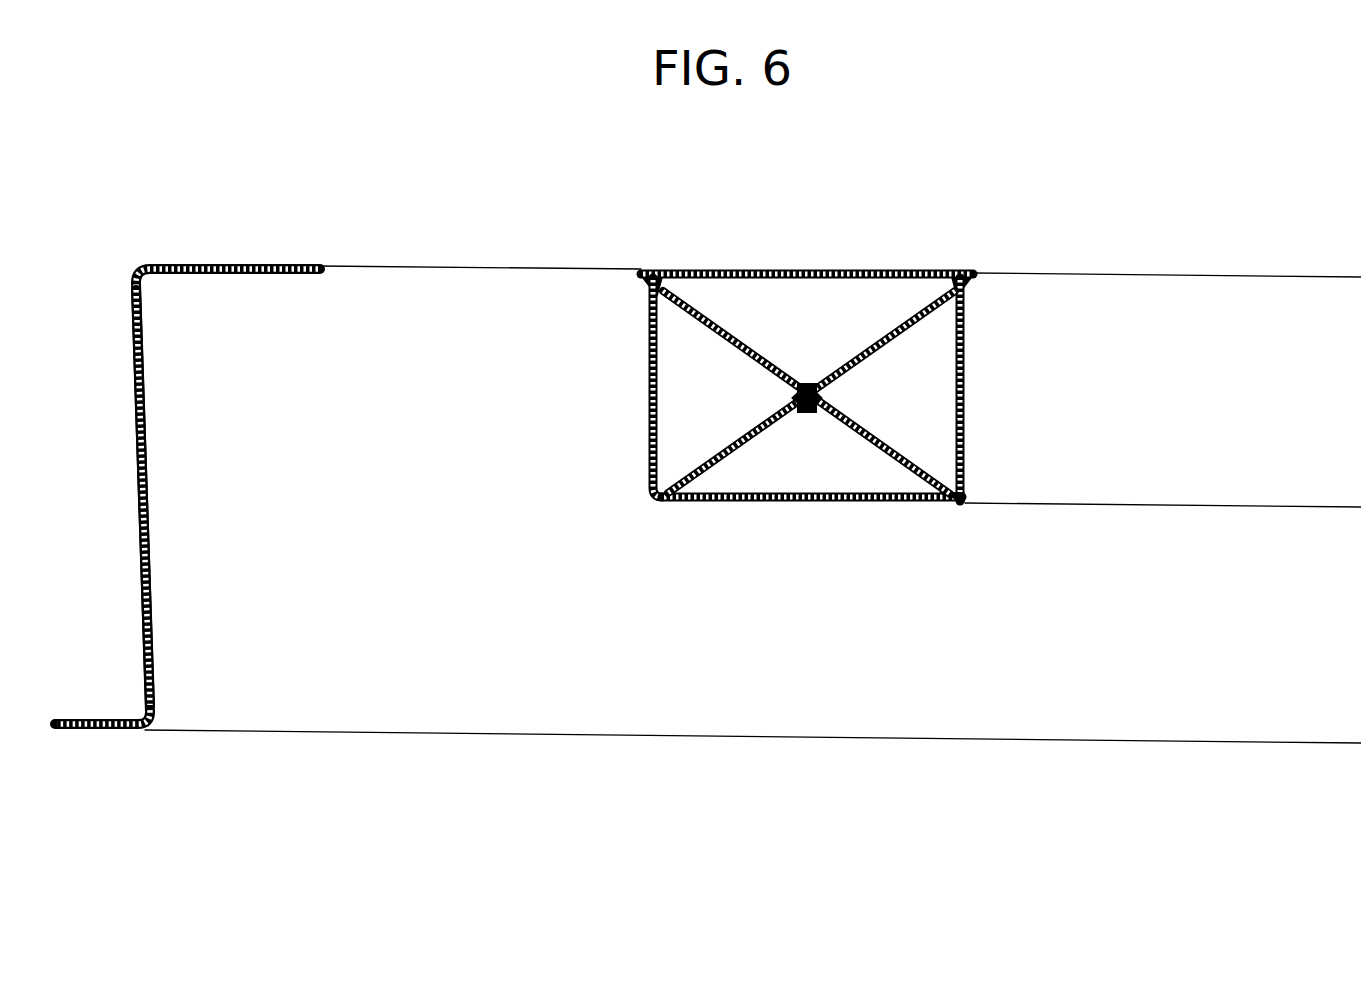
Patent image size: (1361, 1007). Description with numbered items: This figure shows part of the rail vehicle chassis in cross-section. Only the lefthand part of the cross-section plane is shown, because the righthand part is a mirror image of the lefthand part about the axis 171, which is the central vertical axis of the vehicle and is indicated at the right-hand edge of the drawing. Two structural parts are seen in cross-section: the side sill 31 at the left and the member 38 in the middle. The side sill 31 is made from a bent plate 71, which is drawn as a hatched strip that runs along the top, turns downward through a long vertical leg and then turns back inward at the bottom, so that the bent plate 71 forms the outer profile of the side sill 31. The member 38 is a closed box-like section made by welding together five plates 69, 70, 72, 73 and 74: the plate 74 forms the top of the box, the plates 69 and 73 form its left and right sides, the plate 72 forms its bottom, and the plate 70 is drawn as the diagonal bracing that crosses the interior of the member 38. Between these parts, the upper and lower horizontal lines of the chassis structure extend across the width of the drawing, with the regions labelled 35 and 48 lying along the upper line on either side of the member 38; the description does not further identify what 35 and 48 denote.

The side sill 31 is at (187, 461).
The bent plate 71 is at (138, 435).
The top panel 35 is at (418, 308).
The top panel portion 48 is at (1184, 307).
The axis 171 is at (1360, 628).
The member 38 is at (810, 392).
The plate 74 is at (702, 270).
The plate 69 is at (648, 402).
The plate 73 is at (965, 420).
The plate 72 is at (808, 503).
The plate 70 is at (809, 392).